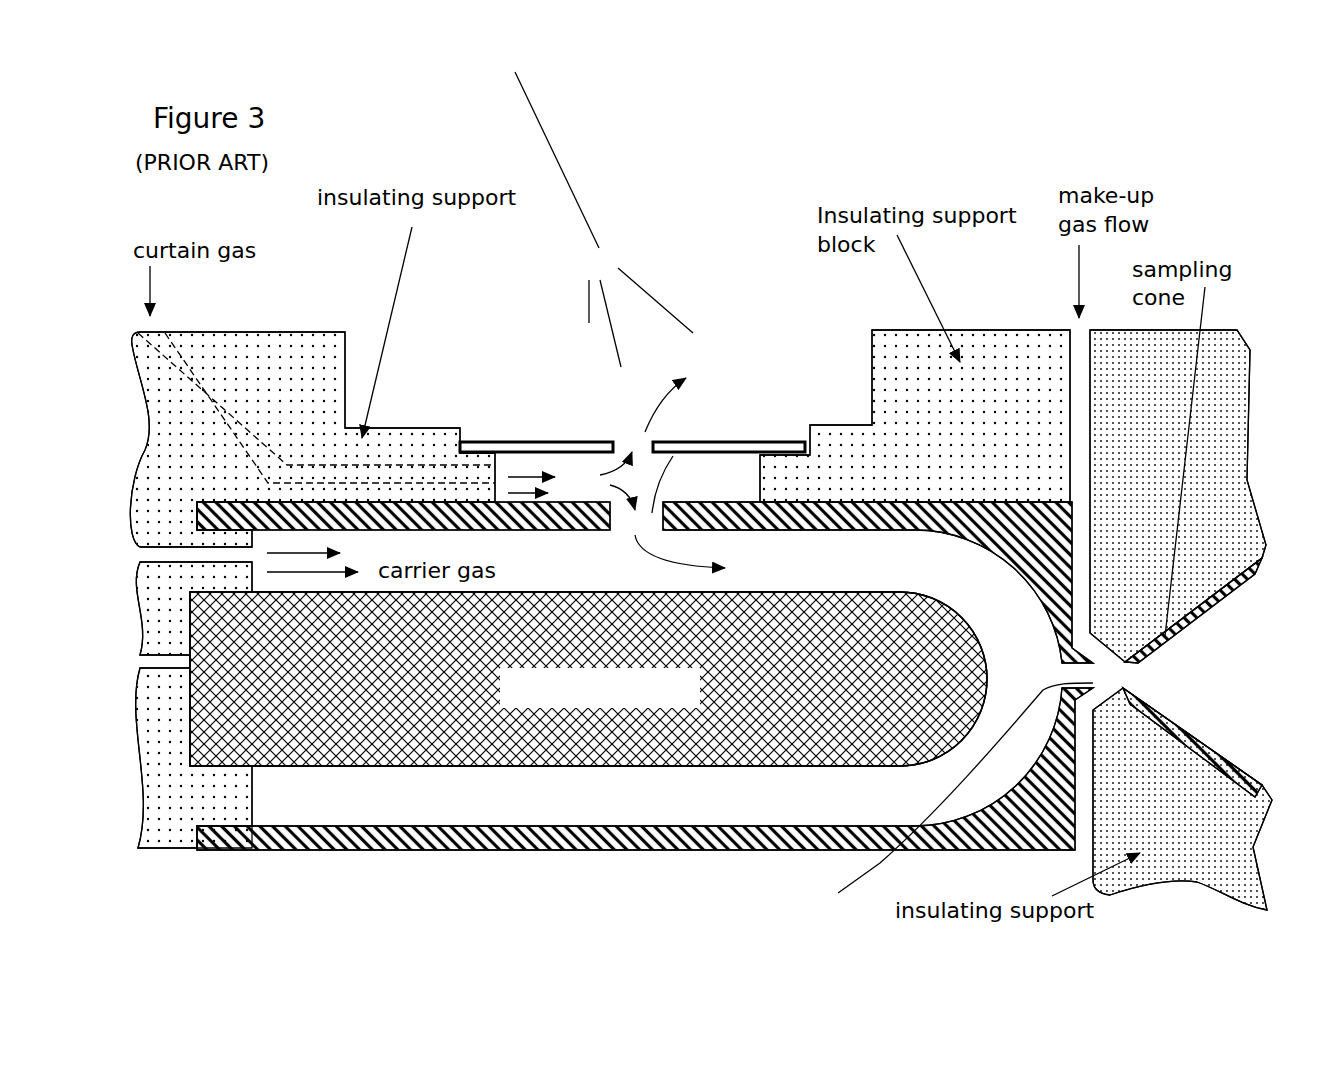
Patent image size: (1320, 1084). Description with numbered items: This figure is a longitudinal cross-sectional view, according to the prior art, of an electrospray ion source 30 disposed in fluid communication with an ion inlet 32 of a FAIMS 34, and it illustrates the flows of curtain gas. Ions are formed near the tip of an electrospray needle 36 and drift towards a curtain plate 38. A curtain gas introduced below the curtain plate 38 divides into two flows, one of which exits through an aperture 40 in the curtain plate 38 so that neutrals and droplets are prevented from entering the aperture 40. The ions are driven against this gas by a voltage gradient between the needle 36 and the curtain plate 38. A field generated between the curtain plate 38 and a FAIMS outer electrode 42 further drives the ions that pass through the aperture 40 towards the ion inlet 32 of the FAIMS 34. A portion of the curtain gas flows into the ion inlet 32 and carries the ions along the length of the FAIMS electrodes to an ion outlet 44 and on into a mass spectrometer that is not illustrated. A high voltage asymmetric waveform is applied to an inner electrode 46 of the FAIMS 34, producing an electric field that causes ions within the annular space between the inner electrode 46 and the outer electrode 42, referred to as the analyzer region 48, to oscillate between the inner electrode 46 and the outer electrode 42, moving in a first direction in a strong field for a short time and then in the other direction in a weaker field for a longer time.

The electrospray ion source 30 is at (615, 117).
The ion inlet 32 is at (697, 448).
The FAIMS 34 is at (674, 899).
The electrospray needle 36 is at (548, 137).
The curtain plate 38 is at (555, 447).
The aperture 40 is at (620, 440).
The outer electrode 42 is at (727, 517).
The ion outlet 44 is at (949, 800).
The inner electrode 46 is at (342, 725).
The analyzer region 48 is at (800, 557).